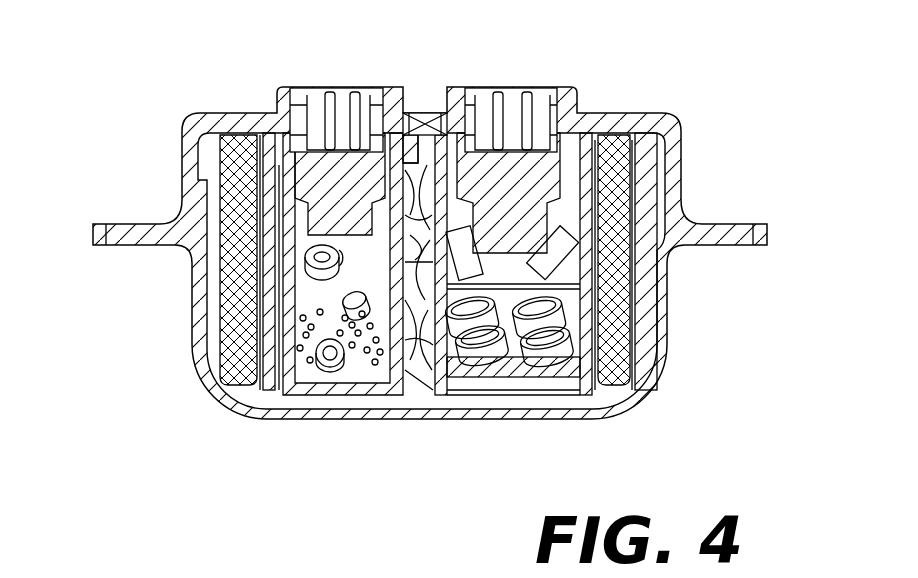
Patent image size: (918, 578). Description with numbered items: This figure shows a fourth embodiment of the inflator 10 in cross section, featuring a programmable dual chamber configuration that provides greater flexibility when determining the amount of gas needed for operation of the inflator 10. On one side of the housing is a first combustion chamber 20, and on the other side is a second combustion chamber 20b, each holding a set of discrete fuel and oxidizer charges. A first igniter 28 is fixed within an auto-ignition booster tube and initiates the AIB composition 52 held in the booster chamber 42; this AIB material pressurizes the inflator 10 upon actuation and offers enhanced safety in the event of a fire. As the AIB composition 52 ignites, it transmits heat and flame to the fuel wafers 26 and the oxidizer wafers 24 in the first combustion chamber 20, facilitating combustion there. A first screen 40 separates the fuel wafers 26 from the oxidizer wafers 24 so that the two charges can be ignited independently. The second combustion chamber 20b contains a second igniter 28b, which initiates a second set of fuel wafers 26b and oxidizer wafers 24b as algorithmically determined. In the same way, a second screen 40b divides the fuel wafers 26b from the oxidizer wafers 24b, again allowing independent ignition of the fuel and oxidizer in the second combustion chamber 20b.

The inflator 10 is at (650, 69).
The first combustion chamber 20 is at (268, 215).
The second combustion chamber 20b is at (558, 165).
The oxidizer wafers 24 is at (419, 170).
The oxidizer wafers 24b is at (568, 252).
The fuel wafers 26 is at (420, 337).
The fuel wafers 26b is at (561, 359).
The first igniter 28 is at (352, 86).
The second igniter 28b is at (525, 86).
The first screen 40 is at (266, 275).
The second screen 40b is at (574, 288).
The booster chamber 42 is at (309, 291).
The AIB composition 52 is at (329, 356).